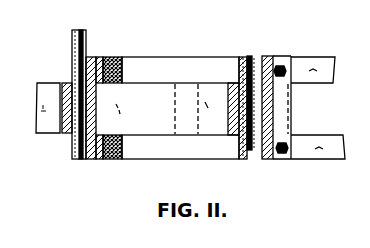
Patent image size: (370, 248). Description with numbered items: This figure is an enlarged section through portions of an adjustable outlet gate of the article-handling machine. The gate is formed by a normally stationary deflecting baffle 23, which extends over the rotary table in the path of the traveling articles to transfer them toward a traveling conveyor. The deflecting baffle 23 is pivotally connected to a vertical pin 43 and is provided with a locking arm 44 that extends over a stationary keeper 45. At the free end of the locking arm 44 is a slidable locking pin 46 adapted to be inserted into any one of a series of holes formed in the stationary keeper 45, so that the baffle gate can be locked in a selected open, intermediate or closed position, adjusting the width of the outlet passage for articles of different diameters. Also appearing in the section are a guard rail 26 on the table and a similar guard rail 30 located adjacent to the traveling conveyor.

The deflecting baffle 23 is at (45, 131).
The guard rail 26 is at (322, 83).
The guard rail 30 is at (72, 68).
The vertical pin 43 is at (80, 160).
The locking arm 44 is at (147, 118).
The stationary keeper 45 is at (232, 148).
The slidable locking pin 46 is at (248, 160).